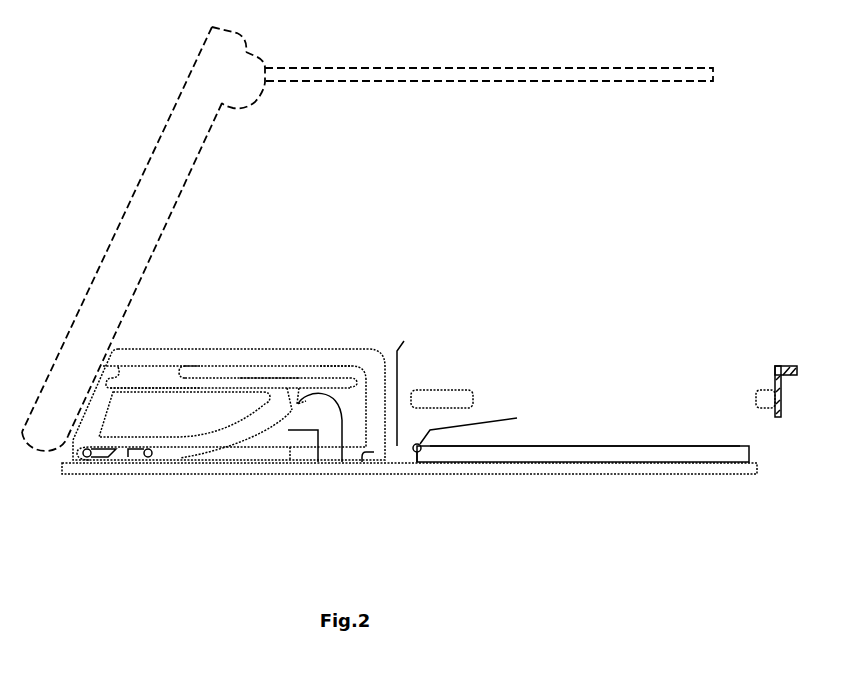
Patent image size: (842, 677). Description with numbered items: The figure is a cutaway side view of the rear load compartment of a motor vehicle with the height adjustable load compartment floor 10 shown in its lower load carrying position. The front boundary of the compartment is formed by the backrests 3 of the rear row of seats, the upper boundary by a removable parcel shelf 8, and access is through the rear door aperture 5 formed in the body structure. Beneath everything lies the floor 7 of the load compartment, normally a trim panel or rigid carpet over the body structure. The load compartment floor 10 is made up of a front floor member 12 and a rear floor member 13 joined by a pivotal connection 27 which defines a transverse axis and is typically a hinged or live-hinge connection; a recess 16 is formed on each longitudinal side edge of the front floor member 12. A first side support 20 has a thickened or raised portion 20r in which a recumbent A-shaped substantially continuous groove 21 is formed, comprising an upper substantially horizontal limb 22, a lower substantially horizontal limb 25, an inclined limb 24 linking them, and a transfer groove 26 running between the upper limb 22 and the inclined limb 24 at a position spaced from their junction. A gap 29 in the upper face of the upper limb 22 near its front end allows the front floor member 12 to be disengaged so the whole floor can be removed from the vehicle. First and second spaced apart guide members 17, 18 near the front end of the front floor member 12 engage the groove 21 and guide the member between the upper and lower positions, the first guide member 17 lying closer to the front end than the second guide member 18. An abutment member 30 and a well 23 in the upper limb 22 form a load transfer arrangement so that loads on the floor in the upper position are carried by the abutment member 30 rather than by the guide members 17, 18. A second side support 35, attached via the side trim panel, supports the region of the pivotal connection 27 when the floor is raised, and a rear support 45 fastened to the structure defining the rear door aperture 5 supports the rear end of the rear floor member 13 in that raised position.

The backrests 3 is at (193, 153).
The parcel shelf 8 is at (468, 82).
The rear door aperture 5 is at (784, 365).
The rear support 45 is at (758, 390).
The load compartment floor 10 is at (621, 446).
The rear floor member 13 is at (585, 445).
The floor 7 is at (508, 475).
The first side support 20 is at (370, 350).
The raised portion 20r is at (229, 374).
The gap 29 is at (186, 367).
The well 23 is at (128, 388).
The upper limb 22 is at (269, 378).
The groove 21 is at (336, 376).
The lower limb 25 is at (182, 458).
The abutment member 30 is at (247, 416).
The first guide member 17 is at (110, 458).
The second guide member 18 is at (128, 457).
The inclined limb 24 is at (318, 462).
The transfer groove 26 is at (342, 462).
The recess 16 is at (362, 462).
The front floor member 12 is at (404, 341).
The second side support 35 is at (457, 390).
The pivotal connection 27 is at (517, 418).